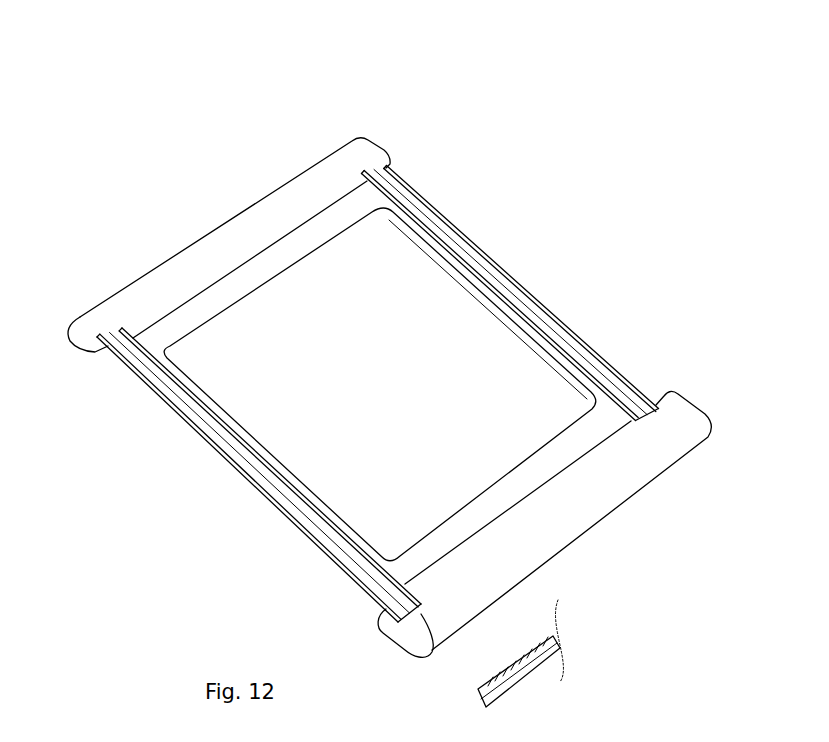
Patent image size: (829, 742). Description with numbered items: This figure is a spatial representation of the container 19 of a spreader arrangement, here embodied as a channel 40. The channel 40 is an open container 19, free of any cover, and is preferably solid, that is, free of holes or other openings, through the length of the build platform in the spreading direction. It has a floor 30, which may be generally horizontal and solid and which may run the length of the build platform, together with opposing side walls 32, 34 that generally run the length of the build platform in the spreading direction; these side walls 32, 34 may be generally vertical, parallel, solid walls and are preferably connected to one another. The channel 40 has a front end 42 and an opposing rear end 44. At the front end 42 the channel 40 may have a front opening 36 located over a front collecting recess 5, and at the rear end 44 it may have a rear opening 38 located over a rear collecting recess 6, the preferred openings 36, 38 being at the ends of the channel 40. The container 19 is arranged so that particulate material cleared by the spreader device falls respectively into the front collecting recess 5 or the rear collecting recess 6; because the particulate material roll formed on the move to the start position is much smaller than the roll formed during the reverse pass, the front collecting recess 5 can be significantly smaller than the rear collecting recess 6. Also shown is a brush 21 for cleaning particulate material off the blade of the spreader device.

The front collecting recess 5 is at (362, 150).
The rear collecting recess 6 is at (582, 545).
The container 19 is at (523, 293).
The brush for cleaning off of the spreader device blade 21 is at (517, 675).
The floor 30 is at (270, 483).
The side wall 32 is at (173, 410).
The side wall 34 is at (340, 542).
The front opening 36 is at (108, 318).
The rear opening 38 is at (433, 657).
The channel 40 is at (447, 230).
The front end 42 is at (116, 323).
The rear end 44 is at (424, 607).